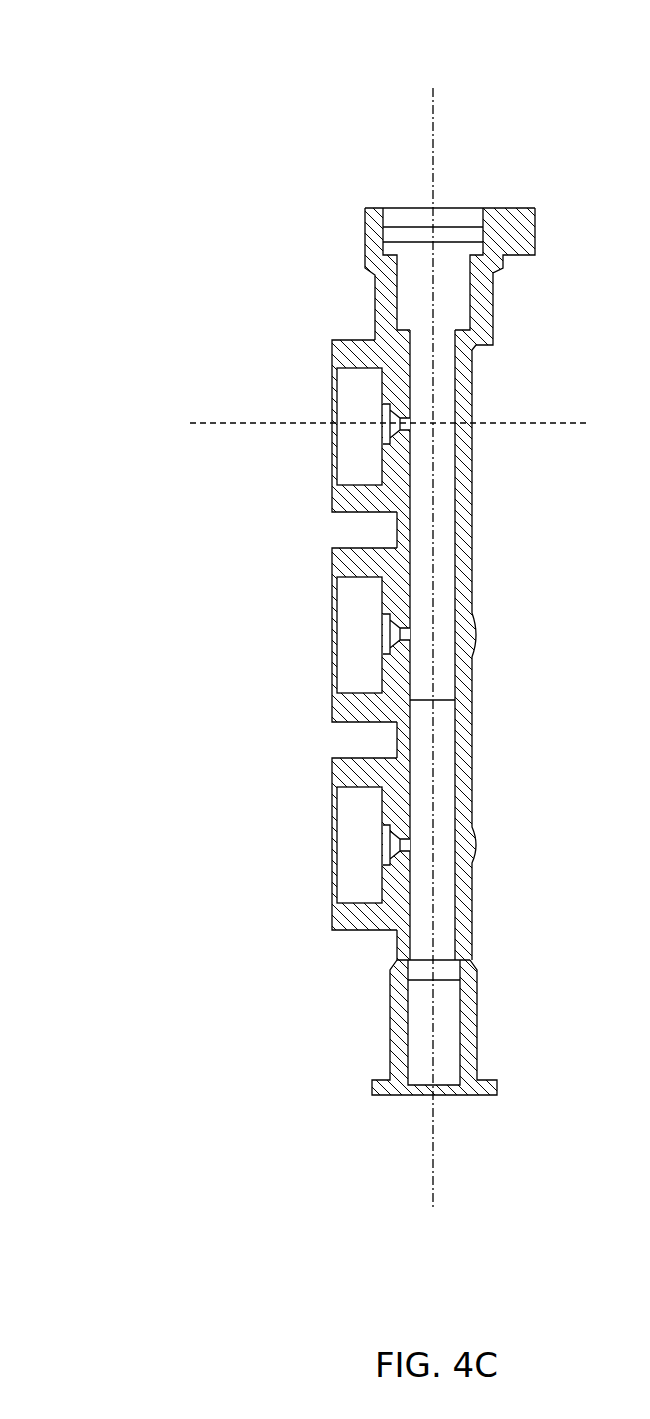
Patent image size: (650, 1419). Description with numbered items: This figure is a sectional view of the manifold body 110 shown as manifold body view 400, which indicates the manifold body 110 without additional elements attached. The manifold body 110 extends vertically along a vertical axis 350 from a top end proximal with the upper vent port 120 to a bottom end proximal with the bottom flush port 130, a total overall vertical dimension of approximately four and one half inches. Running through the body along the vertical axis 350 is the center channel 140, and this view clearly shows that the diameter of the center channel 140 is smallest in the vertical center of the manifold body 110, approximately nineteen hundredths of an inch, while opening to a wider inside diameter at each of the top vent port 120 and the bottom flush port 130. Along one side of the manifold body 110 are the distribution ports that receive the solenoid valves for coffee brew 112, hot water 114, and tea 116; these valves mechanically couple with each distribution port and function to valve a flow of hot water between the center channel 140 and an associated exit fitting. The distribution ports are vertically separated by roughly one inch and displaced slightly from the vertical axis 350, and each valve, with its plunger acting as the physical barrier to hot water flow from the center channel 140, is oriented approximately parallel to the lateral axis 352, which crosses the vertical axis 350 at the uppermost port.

The manifold body view 400 is at (77, 118).
The manifold body 110 is at (513, 233).
The upper vent port 120 is at (442, 213).
The bottom flush port 130 is at (442, 1078).
The center channel 140 is at (443, 484).
The brew solenoid valve 112 is at (350, 403).
The hot water solenoid valve 114 is at (352, 642).
The tea solenoid valve 116 is at (352, 850).
The vertical axis 350 is at (434, 122).
The lateral axis 352 is at (542, 422).